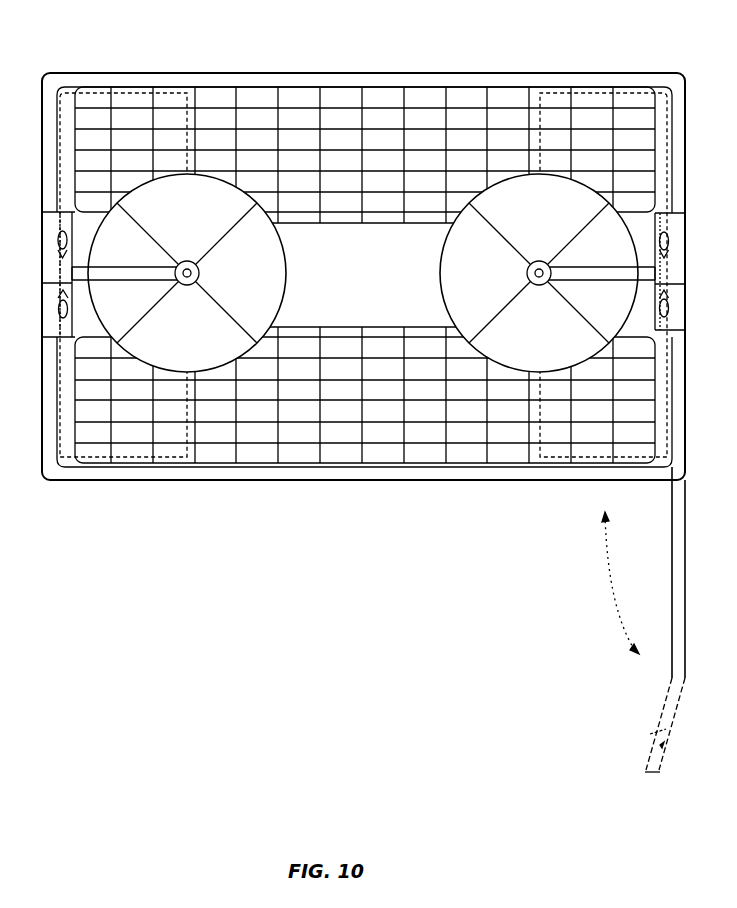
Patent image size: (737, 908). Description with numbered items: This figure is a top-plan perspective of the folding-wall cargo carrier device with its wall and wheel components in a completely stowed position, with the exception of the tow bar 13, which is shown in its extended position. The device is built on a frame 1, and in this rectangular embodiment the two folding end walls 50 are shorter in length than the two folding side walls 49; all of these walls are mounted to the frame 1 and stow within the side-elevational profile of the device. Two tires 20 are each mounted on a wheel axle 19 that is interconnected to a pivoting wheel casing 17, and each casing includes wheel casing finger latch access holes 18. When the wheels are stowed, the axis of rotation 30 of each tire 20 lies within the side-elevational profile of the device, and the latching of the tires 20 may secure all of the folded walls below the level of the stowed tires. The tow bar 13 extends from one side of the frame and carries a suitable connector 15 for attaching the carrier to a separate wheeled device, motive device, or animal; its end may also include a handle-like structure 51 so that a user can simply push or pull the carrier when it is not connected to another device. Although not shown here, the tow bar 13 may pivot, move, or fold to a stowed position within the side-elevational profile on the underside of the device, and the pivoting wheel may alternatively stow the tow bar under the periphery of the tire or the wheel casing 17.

The frame 1 is at (97, 72).
The tow bar 13 is at (660, 712).
The connector 15 is at (662, 748).
The pivoting wheel casing 17 is at (363, 274).
The wheel casing finger latch access hole 18 is at (58, 227).
The wheel axle 19 is at (116, 268).
The tire 20 is at (201, 345).
The axis of rotation 30 is at (200, 272).
The side wall 49 is at (476, 100).
The end wall 50 is at (172, 100).
The handle-like structure 51 is at (643, 770).